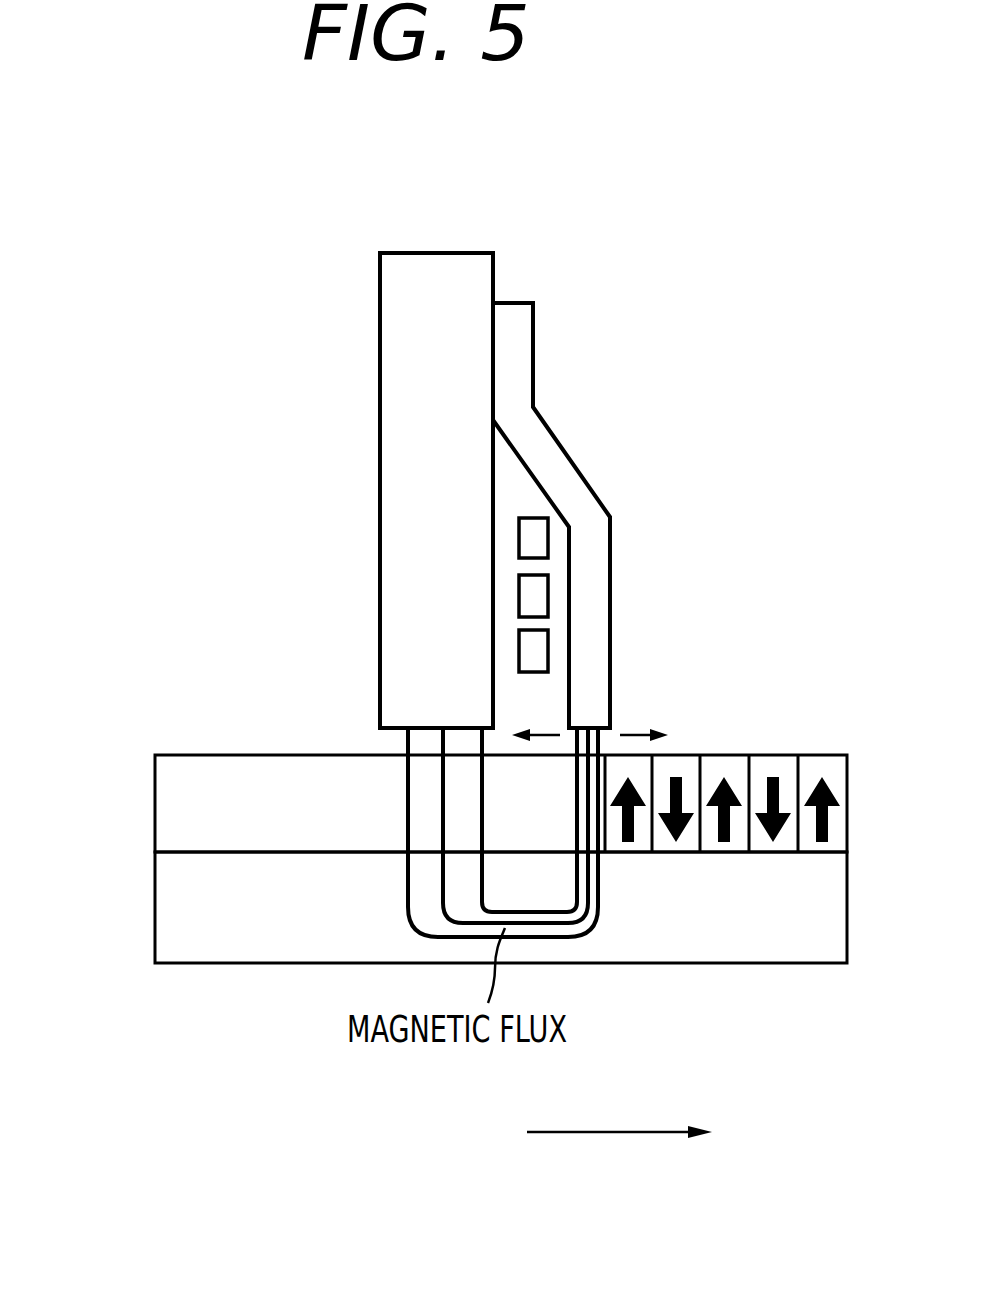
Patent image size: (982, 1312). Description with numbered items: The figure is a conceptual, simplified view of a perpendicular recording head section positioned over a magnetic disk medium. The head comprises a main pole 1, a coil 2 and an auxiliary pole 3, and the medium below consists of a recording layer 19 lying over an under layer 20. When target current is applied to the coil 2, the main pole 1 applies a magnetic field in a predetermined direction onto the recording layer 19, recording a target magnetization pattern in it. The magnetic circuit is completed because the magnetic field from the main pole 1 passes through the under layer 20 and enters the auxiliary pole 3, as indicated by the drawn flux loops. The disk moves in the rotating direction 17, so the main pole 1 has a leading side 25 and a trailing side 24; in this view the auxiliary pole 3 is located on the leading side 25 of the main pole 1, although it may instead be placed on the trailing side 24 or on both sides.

The main pole 1 is at (597, 575).
The coil 2 is at (537, 528).
The auxiliary pole 3 is at (395, 337).
The rotating direction of the disk 17 is at (602, 1175).
The recording layer 19 is at (160, 783).
The under layer 20 is at (160, 905).
The trailing side 24 is at (658, 725).
The leading side 25 is at (520, 727).